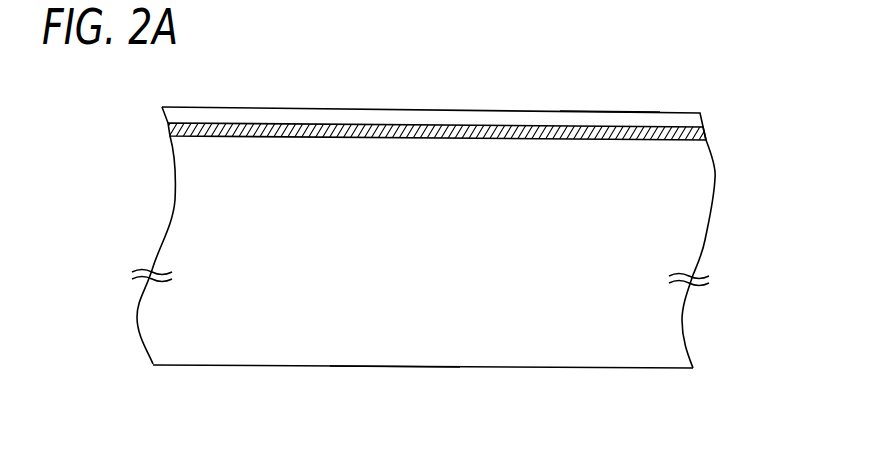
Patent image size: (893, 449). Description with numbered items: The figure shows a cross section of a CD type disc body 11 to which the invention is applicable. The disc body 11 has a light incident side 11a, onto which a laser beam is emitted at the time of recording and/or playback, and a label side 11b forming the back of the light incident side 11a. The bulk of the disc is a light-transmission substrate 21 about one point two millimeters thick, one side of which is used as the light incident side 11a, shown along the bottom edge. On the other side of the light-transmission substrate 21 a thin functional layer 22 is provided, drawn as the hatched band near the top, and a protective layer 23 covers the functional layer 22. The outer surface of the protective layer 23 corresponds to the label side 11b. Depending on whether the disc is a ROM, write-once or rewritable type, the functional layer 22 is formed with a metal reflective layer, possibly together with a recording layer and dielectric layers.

The disc body 11 is at (330, 85).
The light incident side 11a is at (373, 366).
The label side 11b is at (603, 111).
The light-transmission substrate 21 is at (665, 321).
The functional layer 22 is at (702, 139).
The protective layer 23 is at (697, 120).